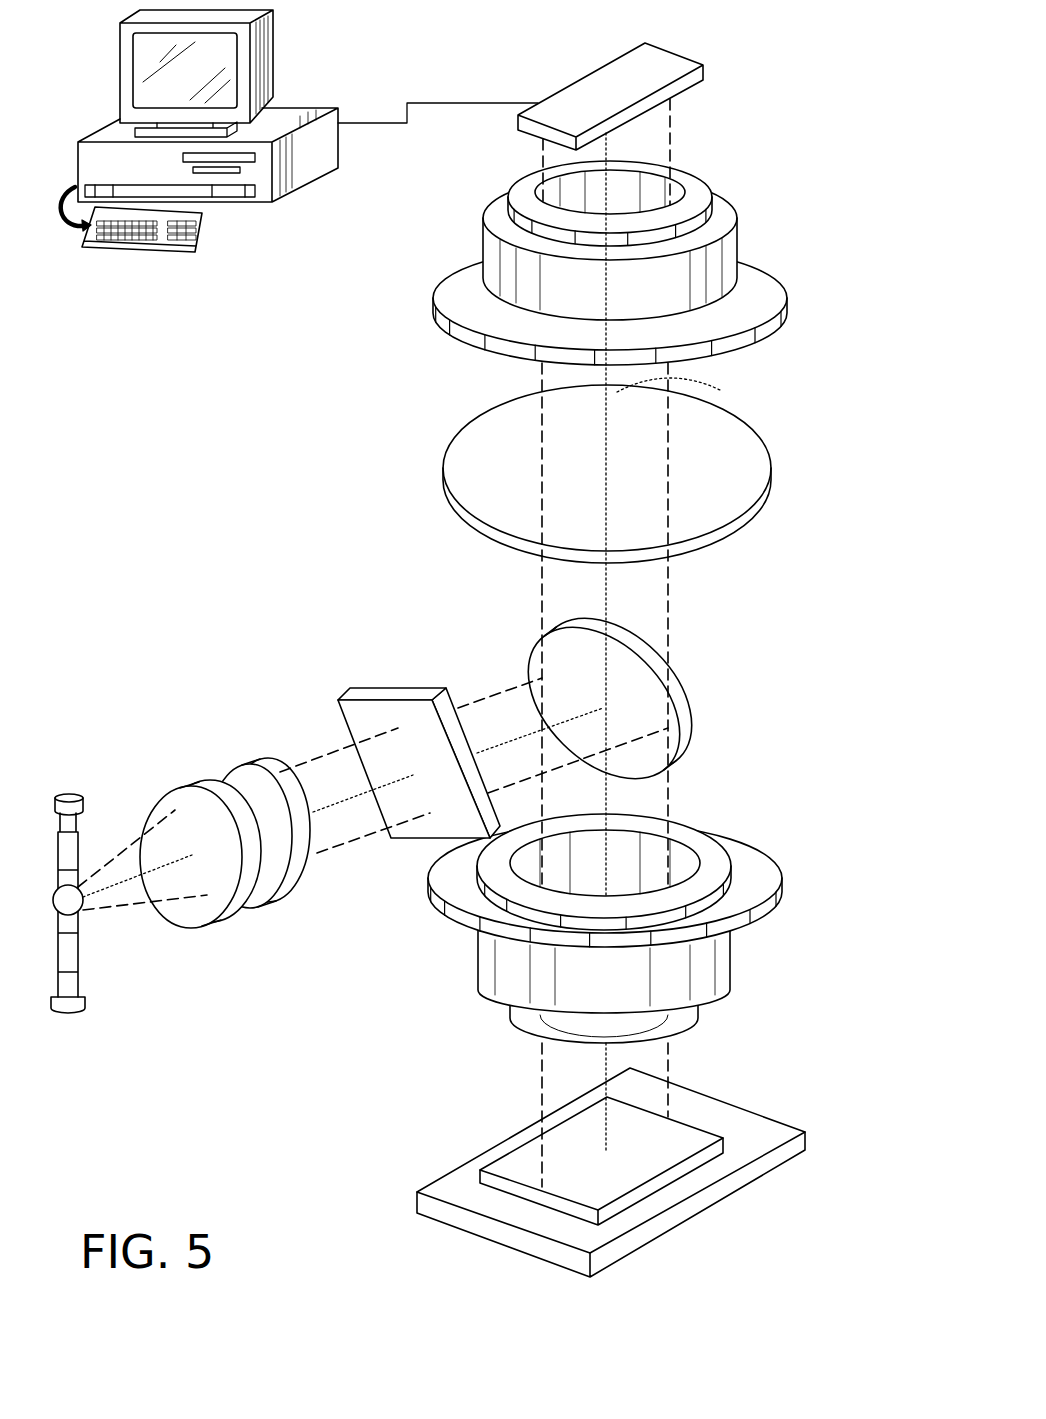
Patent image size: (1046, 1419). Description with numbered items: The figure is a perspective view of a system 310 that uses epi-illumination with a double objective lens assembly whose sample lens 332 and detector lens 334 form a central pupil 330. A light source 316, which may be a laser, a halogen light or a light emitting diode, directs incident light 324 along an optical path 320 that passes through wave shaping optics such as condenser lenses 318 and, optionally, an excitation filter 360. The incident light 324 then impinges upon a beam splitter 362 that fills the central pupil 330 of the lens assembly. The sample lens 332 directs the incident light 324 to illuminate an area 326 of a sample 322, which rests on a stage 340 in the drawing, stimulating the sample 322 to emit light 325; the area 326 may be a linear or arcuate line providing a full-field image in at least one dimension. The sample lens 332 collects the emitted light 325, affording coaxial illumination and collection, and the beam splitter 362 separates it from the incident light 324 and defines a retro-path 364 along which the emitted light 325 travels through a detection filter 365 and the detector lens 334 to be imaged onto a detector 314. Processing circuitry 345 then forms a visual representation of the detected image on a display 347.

The system 310 is at (802, 42).
The detector 314 is at (707, 68).
The light source 316 is at (75, 793).
The condenser lenses 318 is at (262, 752).
The optical path 320 is at (322, 812).
The sample 322 is at (653, 1162).
The incident light 324 is at (98, 912).
The emitted light 325 is at (678, 146).
The area 326 is at (557, 1176).
The central pupil 330 is at (677, 653).
The sample lens 332 is at (478, 956).
The detector lens 334 is at (482, 221).
The stage 340 is at (777, 1122).
The processing circuitry 345 is at (308, 112).
The display 347 is at (118, 72).
The excitation filter 360 is at (377, 686).
The beam splitter 362 is at (527, 665).
The retro-path 364 is at (693, 392).
The detection filter 365 is at (443, 468).